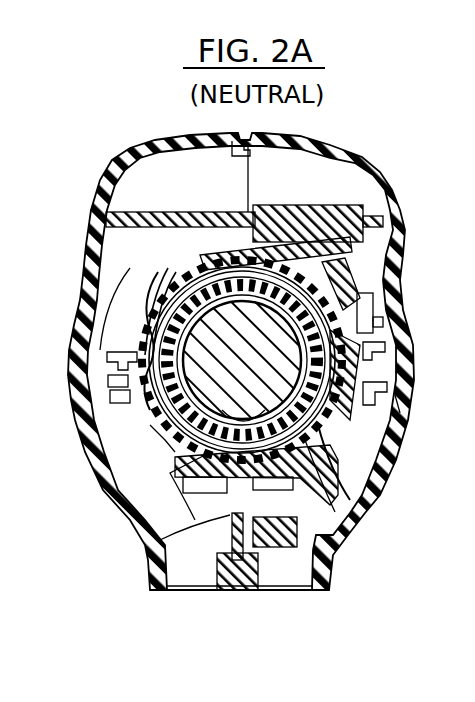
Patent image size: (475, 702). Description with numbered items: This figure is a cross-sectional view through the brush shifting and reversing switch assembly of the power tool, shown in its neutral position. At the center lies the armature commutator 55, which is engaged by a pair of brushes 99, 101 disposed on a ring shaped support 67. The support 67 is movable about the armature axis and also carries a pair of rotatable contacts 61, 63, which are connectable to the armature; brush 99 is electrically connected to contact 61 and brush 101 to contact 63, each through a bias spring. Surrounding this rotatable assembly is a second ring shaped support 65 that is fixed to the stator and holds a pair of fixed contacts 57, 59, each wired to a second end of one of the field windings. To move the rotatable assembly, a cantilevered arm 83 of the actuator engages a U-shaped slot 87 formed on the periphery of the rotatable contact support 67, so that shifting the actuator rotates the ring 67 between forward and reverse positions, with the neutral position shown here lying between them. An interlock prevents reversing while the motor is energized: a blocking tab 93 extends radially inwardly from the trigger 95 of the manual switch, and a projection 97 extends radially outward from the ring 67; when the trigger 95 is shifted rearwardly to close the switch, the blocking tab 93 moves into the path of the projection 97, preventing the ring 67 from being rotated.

The armature commutator 55 is at (335, 305).
The first fixed winding contact 57 is at (147, 357).
The second fixed winding contact 59 is at (375, 378).
The rotatable contact 61 is at (150, 290).
The rotatable contact 63 is at (320, 420).
The ring shaped support 65 is at (400, 413).
The ring shaped support 67 is at (143, 420).
The cantilevered arm 83 is at (110, 378).
The U-shaped slot 87 is at (128, 357).
The blocking tab 93 is at (205, 520).
The trigger 95 is at (260, 587).
The projection 97 is at (228, 542).
The brush 99 is at (200, 285).
The brush 101 is at (175, 458).